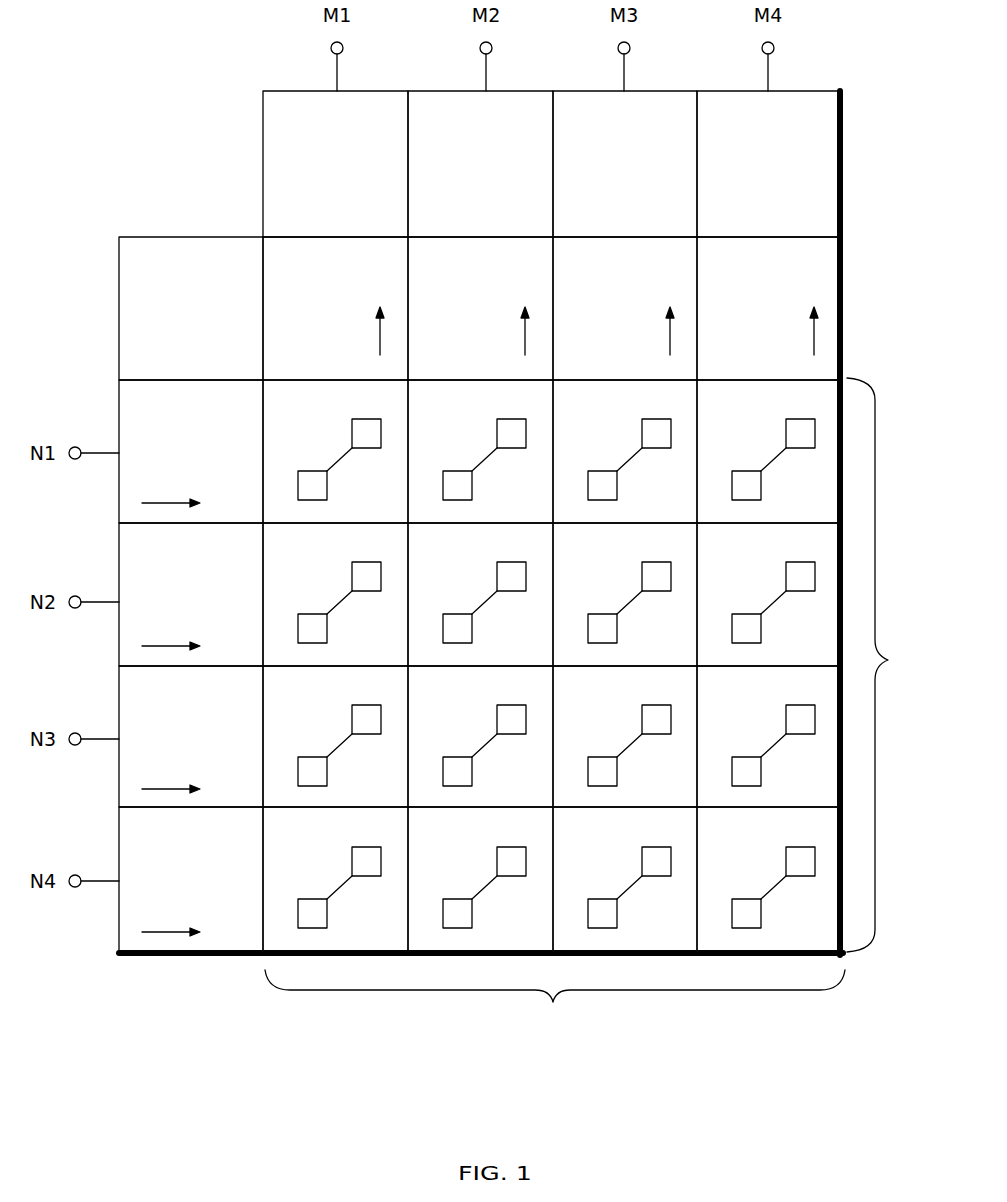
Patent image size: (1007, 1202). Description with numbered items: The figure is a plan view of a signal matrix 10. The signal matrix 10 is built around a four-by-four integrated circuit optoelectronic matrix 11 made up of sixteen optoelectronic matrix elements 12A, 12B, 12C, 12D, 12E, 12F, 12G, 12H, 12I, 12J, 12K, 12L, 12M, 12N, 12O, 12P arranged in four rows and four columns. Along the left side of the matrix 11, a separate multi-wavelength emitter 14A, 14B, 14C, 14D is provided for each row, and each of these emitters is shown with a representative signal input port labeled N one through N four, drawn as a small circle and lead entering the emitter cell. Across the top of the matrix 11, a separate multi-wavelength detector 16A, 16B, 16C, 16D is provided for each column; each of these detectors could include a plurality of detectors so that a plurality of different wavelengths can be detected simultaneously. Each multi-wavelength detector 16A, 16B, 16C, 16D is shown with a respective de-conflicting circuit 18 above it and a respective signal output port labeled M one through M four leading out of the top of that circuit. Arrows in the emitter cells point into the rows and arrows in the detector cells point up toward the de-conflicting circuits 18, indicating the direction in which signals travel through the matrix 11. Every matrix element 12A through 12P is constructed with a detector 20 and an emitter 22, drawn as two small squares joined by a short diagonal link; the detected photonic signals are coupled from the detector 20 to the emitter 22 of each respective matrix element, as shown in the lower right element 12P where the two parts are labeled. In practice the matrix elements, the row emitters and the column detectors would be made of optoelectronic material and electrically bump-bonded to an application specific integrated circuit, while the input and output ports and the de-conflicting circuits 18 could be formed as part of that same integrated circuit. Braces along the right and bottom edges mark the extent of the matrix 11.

The signal matrix 10 is at (173, 70).
The integrated circuit optoelectronic matrix 11 is at (590, 705).
The optoelectronic matrix element 12A is at (313, 417).
The optoelectronic matrix element 12B is at (458, 417).
The optoelectronic matrix element 12C is at (603, 417).
The optoelectronic matrix element 12D is at (747, 417).
The optoelectronic matrix element 12E is at (313, 560).
The optoelectronic matrix element 12F is at (458, 560).
The optoelectronic matrix element 12G is at (603, 560).
The optoelectronic matrix element 12H is at (747, 560).
The optoelectronic matrix element 12I is at (303, 703).
The optoelectronic matrix element 12J is at (454, 703).
The optoelectronic matrix element 12K is at (603, 703).
The optoelectronic matrix element 12L is at (743, 703).
The optoelectronic matrix element 12M is at (315, 844).
The optoelectronic matrix element 12N is at (458, 844).
The optoelectronic matrix element 12O is at (603, 844).
The optoelectronic matrix element 12P is at (768, 880).
The multi-wavelength emitter 14A is at (167, 417).
The multi-wavelength emitter 14B is at (167, 560).
The multi-wavelength emitter 14C is at (167, 703).
The multi-wavelength emitter 14D is at (167, 844).
The multi-wavelength detector 16A is at (311, 274).
The multi-wavelength detector 16B is at (456, 274).
The multi-wavelength detector 16C is at (601, 274).
The multi-wavelength detector 16D is at (745, 274).
The de-conflicting circuit 18 is at (296, 132).
The detector 20 is at (752, 915).
The emitter 22 is at (797, 861).